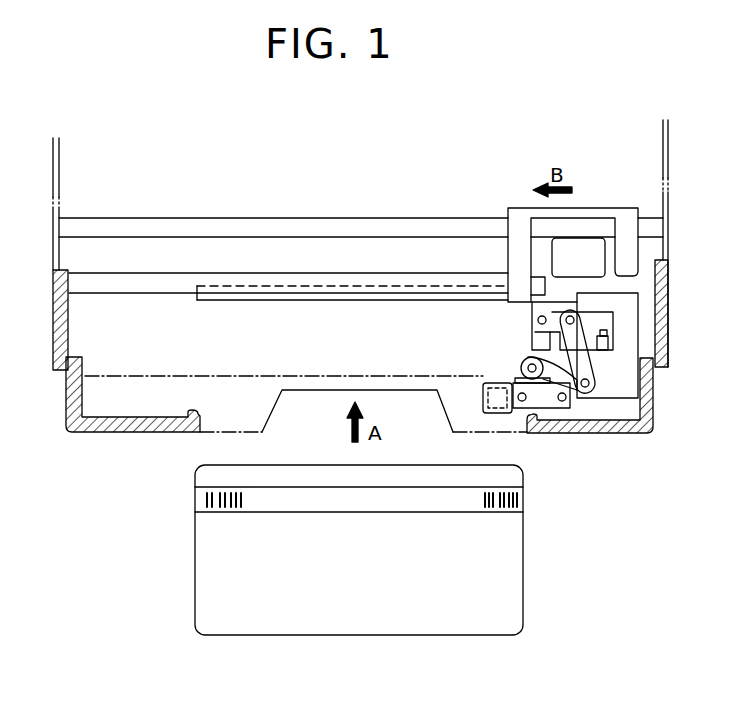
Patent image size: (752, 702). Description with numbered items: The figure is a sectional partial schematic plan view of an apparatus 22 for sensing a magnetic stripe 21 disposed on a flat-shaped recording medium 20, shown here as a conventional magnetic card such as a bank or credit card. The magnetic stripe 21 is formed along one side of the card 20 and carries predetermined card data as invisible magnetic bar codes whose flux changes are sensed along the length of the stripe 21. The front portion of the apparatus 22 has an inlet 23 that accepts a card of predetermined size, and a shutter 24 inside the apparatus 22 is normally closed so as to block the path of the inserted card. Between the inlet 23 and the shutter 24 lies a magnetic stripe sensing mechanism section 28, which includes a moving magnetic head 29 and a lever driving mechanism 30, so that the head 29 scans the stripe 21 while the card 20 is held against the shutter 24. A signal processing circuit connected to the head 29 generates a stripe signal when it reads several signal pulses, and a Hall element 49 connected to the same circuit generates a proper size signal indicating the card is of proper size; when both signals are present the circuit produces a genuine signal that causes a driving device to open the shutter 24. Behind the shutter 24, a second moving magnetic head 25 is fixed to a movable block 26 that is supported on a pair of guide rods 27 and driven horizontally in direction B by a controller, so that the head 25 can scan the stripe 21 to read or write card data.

The recording medium 20 is at (523, 578).
The magnetic stripe 21 is at (522, 505).
The apparatus 22 is at (350, 188).
The inlet 23 is at (200, 418).
The shutter 24 is at (250, 302).
The moving magnetic head 25 is at (573, 252).
The movable block 26 is at (518, 217).
The guide rods 27 is at (153, 285).
The magnetic stripe sensing mechanism section 28 is at (490, 340).
The moving magnetic head 29 is at (470, 385).
The lever driving mechanism 30 is at (600, 365).
The Hall element 49 is at (610, 340).